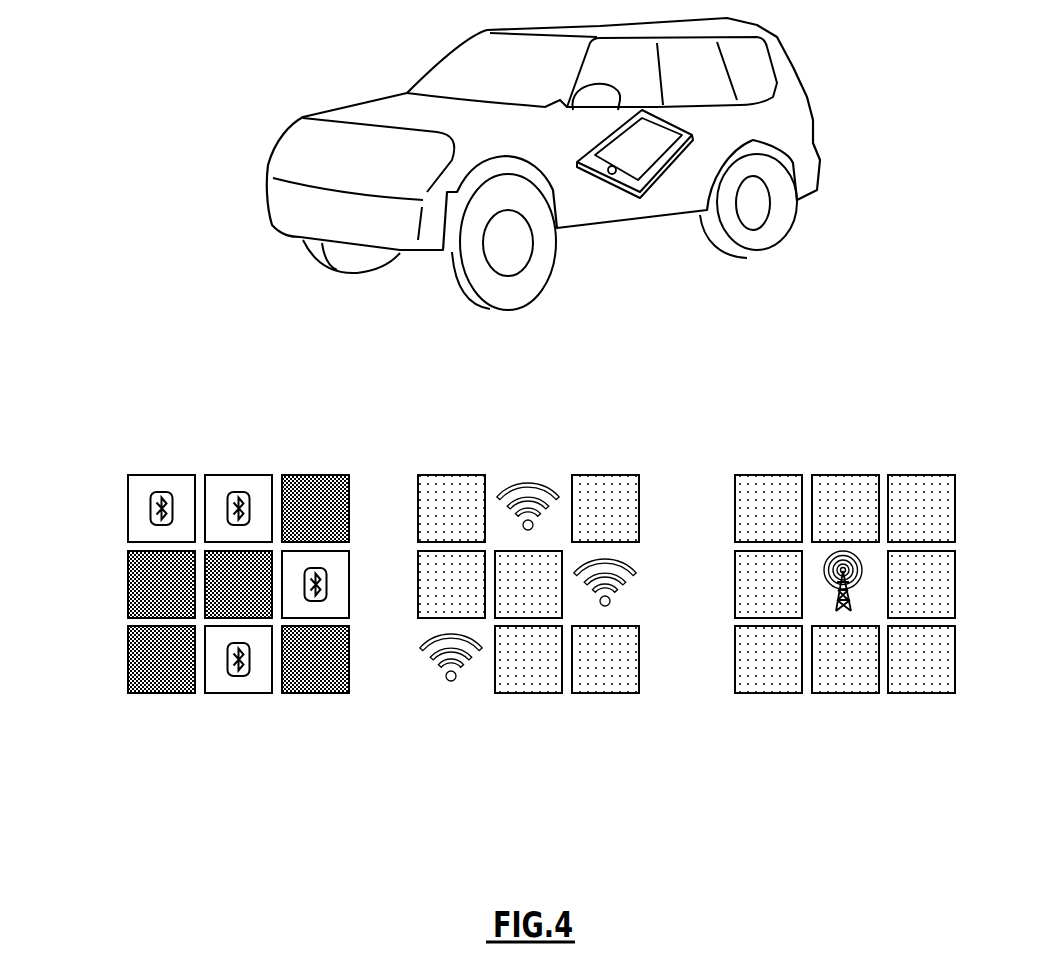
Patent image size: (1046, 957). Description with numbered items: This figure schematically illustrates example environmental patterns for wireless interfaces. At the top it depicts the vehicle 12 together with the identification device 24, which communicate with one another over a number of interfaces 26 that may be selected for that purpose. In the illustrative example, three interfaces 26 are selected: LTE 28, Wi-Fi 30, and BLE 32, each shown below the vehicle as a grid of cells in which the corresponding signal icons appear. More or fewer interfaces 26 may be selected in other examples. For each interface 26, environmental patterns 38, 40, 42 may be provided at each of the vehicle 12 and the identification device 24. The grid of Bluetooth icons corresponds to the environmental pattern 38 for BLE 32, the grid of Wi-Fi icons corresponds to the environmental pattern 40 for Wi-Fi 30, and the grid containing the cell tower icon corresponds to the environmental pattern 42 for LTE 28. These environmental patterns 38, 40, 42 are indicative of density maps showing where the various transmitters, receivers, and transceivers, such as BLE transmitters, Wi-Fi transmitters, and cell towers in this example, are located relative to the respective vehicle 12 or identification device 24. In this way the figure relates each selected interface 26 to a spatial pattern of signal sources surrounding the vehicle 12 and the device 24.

The vehicle 12 is at (482, 70).
The identification device 24 is at (643, 152).
The interfaces 26 is at (104, 490).
The LTE 28 is at (830, 480).
The Wi-Fi 30 is at (528, 480).
The BLE 32 is at (242, 475).
The environmental pattern 38 is at (254, 705).
The environmental pattern 40 is at (534, 705).
The environmental pattern 42 is at (833, 705).